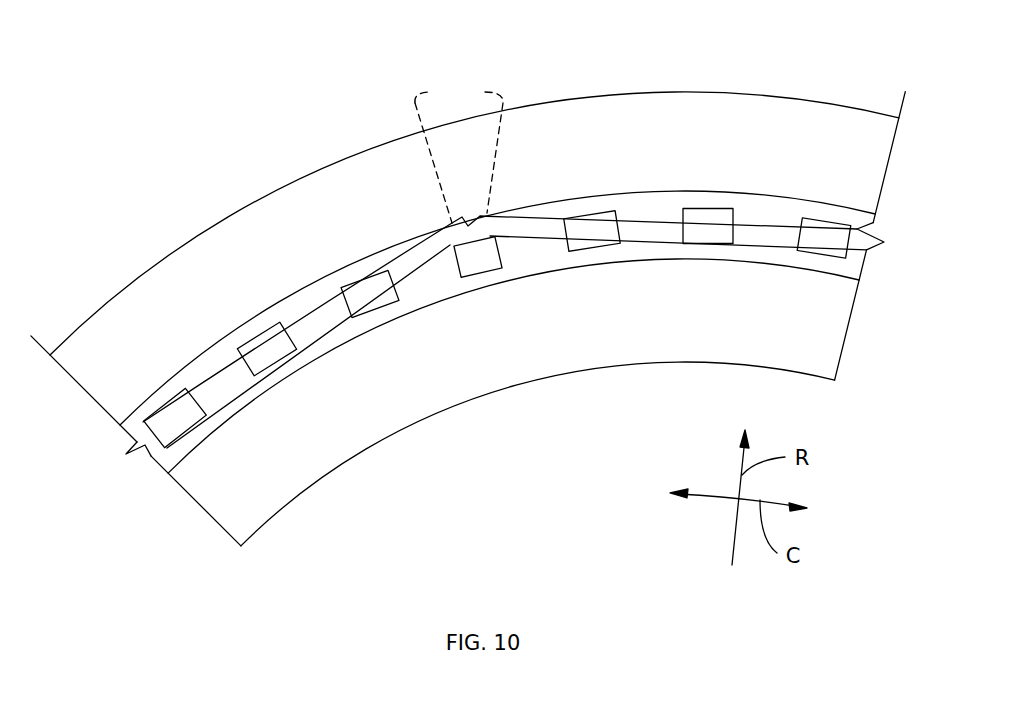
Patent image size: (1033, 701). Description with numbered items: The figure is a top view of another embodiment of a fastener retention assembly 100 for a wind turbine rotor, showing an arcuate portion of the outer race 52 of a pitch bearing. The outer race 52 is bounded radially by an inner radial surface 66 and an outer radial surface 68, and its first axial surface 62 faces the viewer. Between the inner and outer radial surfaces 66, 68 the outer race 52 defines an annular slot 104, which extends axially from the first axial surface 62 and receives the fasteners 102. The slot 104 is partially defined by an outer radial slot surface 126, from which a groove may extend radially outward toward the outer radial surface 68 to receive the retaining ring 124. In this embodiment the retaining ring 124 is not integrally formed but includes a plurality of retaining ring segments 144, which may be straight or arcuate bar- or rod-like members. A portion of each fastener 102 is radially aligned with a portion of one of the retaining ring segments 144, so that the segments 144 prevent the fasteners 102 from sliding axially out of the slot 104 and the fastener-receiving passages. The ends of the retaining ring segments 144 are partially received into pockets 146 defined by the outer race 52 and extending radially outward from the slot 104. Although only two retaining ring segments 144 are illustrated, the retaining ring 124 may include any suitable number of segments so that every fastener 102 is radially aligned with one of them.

The retention assembly 100 is at (143, 110).
The outer race 52 is at (258, 200).
The outer radial surface 68 is at (590, 96).
The outer radial slot surface 126 is at (750, 193).
The first axial surface 62 is at (682, 159).
The annular slot 104 is at (422, 300).
The inner radial surface 66 is at (265, 523).
The retaining ring 124 is at (123, 466).
The retaining ring segments 144 is at (230, 388).
The pockets 146 is at (459, 152).
The fasteners 102 is at (170, 445).